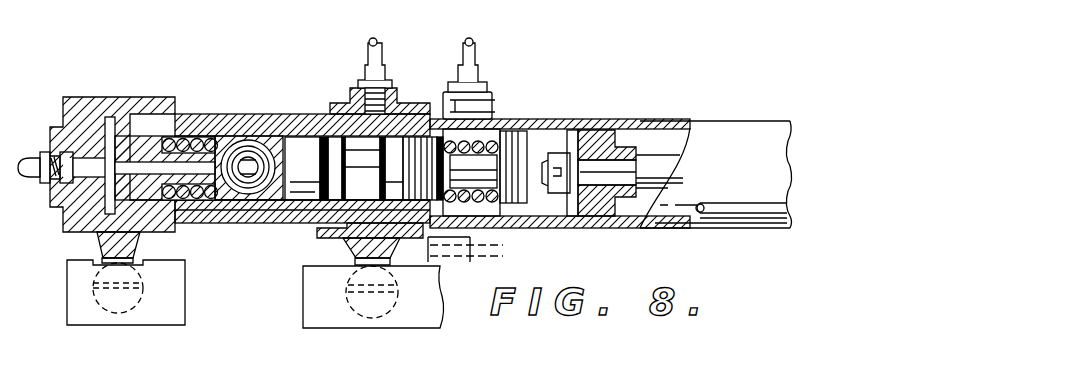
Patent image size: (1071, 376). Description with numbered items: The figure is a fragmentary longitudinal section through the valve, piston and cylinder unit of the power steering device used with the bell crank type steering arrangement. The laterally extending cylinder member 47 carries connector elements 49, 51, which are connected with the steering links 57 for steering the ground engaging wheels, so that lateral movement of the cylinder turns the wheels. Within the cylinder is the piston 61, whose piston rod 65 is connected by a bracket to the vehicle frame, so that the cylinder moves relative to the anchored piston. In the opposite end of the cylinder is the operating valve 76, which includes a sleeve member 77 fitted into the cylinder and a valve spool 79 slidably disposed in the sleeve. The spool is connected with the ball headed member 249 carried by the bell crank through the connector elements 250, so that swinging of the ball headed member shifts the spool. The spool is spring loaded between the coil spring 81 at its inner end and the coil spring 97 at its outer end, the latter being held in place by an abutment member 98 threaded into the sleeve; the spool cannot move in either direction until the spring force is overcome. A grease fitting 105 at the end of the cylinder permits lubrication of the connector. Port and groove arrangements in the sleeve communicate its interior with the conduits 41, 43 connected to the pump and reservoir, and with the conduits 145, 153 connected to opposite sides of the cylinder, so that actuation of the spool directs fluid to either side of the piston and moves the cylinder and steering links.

The cylinder member 47 is at (629, 117).
The operating valve 76 is at (245, 210).
The coil spring 97 is at (162, 97).
The grease fitting 105 is at (24, 160).
The abutment member 98 is at (133, 127).
The connector elements 250 is at (267, 137).
The ball headed member 249 is at (247, 143).
The valve spool 79 is at (352, 164).
The sleeve member 77 is at (417, 113).
The conduit 41 is at (375, 43).
The conduit 43 is at (472, 45).
The coil spring 81 is at (490, 140).
The piston 61 is at (587, 128).
The piston rod 65 is at (653, 162).
The conduit 145 is at (712, 215).
The connector element 51 is at (140, 252).
The connector element 49 is at (353, 253).
The steering link 57 is at (167, 313).
The conduit 153 is at (470, 233).